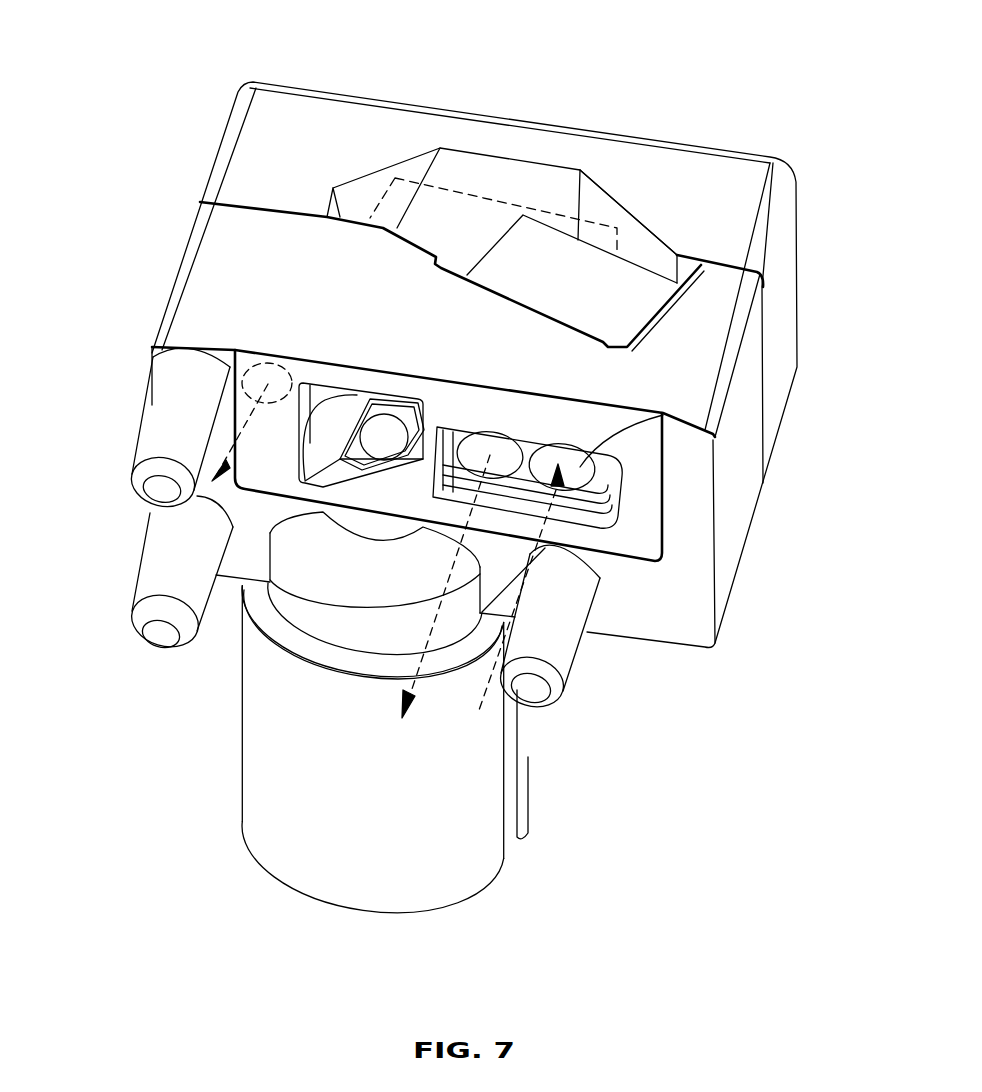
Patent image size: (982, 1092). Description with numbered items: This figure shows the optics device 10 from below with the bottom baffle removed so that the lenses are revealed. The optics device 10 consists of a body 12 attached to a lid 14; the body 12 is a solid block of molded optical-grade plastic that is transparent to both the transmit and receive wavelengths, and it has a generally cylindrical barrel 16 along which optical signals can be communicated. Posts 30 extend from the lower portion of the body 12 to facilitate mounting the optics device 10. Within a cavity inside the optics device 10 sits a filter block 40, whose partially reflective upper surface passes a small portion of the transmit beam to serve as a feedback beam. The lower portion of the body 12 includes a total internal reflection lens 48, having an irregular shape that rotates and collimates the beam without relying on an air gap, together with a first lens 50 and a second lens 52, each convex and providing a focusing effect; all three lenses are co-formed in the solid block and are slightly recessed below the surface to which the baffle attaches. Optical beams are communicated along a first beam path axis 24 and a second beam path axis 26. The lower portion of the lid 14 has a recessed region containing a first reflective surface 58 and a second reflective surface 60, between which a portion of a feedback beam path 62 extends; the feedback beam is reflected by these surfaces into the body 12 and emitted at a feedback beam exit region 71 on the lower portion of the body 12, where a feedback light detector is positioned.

The optics device 10 is at (93, 64).
The body 12 is at (190, 223).
The lid 14 is at (744, 153).
The barrel 16 is at (253, 858).
The first beam path axis 24 is at (497, 712).
The second beam path axis 26 is at (412, 684).
The posts 30 is at (132, 486).
The filter block 40 is at (637, 272).
The total internal reflection (TIR) lens 48 is at (380, 436).
The first lens 50 is at (664, 414).
The second lens 52 is at (498, 443).
The first reflective surface 58 is at (600, 200).
The second reflective surface 60 is at (379, 183).
The feedback beam path 62 is at (471, 196).
The feedback beam exit region 71 is at (243, 372).